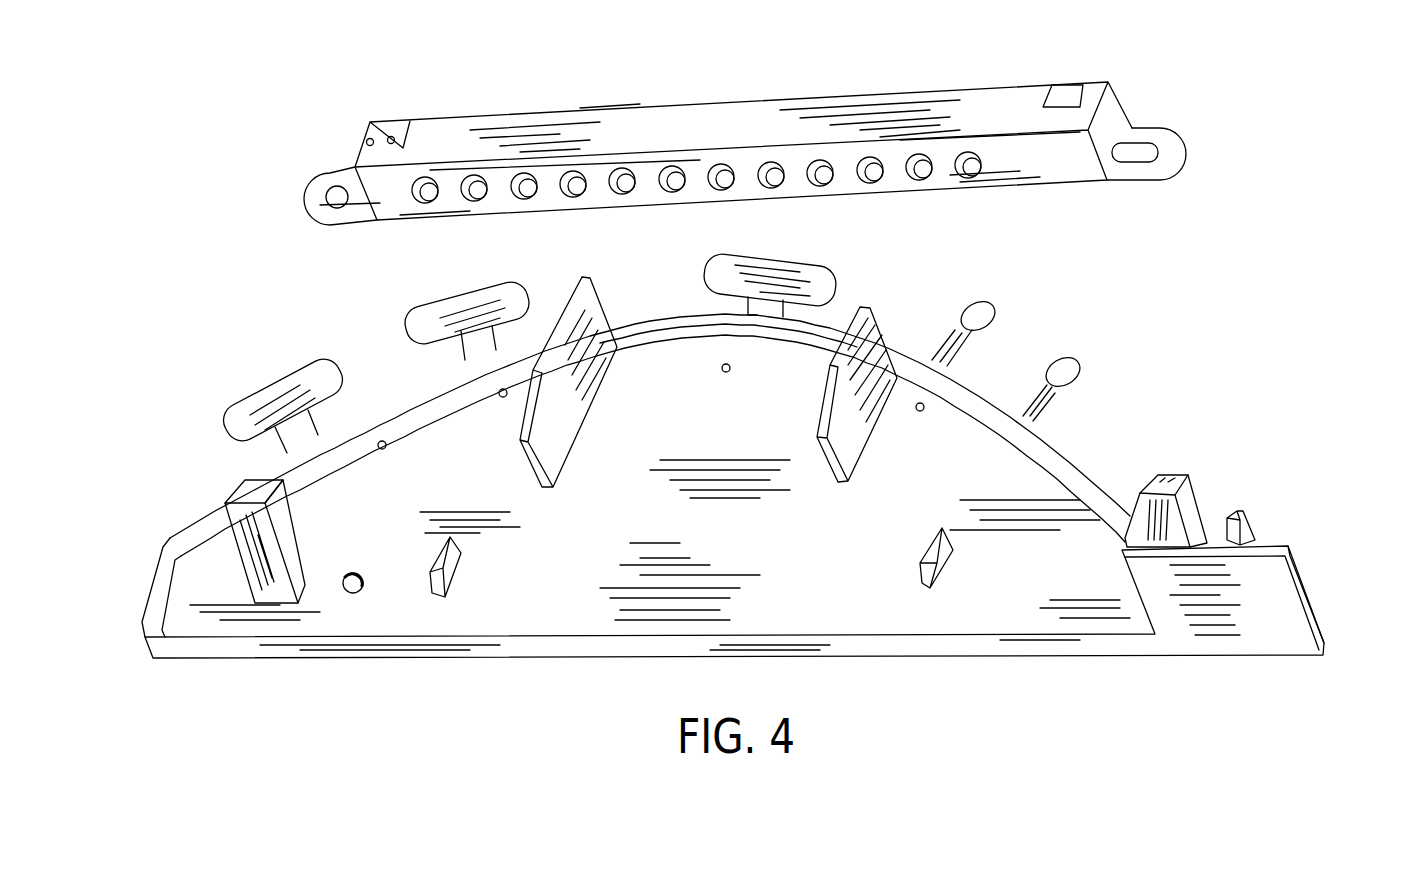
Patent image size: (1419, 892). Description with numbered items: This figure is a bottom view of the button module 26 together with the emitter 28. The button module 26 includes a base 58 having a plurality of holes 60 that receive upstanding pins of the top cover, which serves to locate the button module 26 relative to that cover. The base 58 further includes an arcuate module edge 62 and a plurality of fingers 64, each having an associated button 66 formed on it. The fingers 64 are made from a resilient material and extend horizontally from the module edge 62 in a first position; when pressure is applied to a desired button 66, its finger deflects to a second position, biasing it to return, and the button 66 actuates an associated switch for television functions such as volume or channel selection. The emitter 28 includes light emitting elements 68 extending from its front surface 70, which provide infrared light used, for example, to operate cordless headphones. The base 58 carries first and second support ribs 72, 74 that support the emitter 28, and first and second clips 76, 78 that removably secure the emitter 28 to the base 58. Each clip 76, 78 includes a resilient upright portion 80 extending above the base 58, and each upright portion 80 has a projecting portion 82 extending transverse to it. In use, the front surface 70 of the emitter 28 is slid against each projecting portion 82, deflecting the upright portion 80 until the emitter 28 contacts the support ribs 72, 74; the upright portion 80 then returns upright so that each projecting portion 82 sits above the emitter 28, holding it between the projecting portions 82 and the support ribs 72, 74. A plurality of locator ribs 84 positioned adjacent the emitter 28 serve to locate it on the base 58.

The button module 26 is at (769, 476).
The emitter 28 is at (1085, 66).
The base 58 is at (1058, 622).
The holes 60 is at (503, 398).
The arcuate module edge 62 is at (1080, 452).
The fingers 64 is at (277, 437).
The button 66 is at (318, 362).
The light emitting elements 68 is at (992, 167).
The front surface 70 is at (1047, 142).
The first support rib 72 is at (448, 590).
The second support rib 74 is at (937, 590).
The first clip 76 is at (750, 562).
The second clip 78 is at (1143, 528).
The upright portion 80 is at (282, 543).
The projecting portion 82 is at (282, 492).
The locator ribs 84 is at (582, 275).